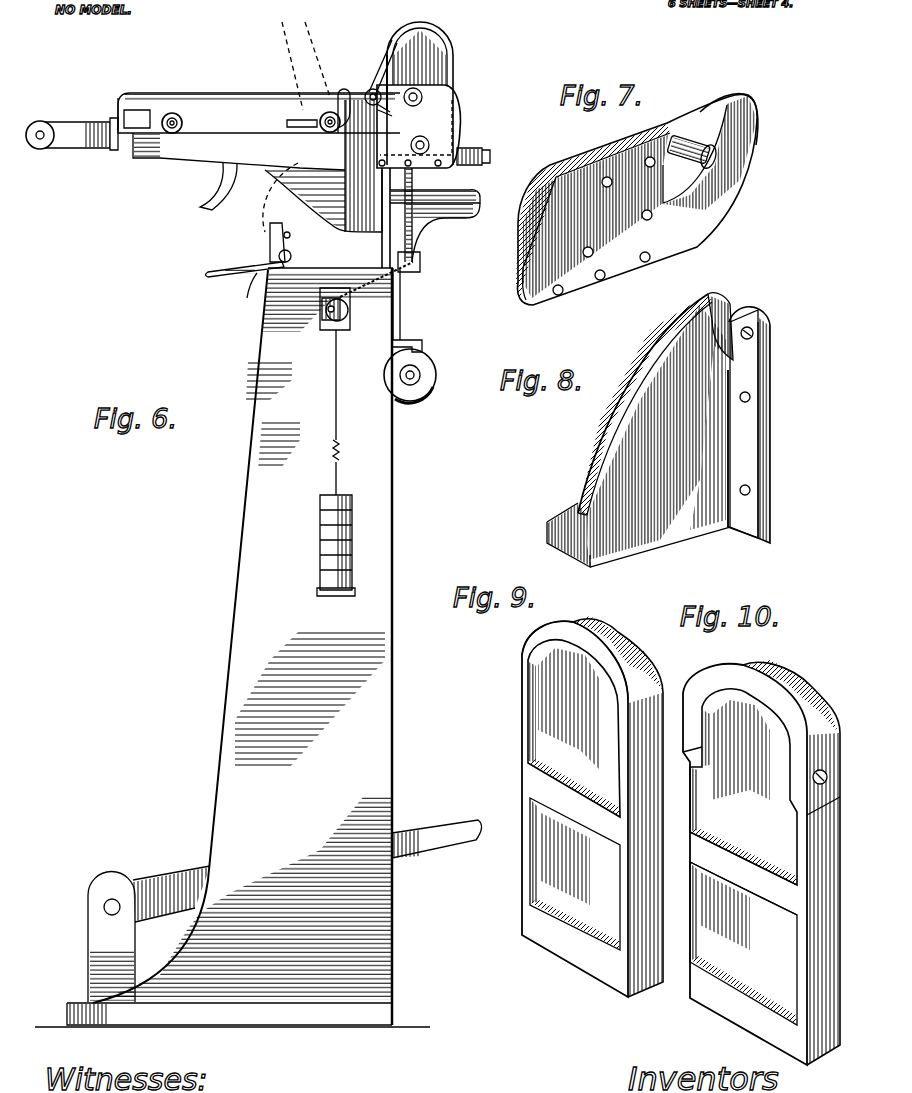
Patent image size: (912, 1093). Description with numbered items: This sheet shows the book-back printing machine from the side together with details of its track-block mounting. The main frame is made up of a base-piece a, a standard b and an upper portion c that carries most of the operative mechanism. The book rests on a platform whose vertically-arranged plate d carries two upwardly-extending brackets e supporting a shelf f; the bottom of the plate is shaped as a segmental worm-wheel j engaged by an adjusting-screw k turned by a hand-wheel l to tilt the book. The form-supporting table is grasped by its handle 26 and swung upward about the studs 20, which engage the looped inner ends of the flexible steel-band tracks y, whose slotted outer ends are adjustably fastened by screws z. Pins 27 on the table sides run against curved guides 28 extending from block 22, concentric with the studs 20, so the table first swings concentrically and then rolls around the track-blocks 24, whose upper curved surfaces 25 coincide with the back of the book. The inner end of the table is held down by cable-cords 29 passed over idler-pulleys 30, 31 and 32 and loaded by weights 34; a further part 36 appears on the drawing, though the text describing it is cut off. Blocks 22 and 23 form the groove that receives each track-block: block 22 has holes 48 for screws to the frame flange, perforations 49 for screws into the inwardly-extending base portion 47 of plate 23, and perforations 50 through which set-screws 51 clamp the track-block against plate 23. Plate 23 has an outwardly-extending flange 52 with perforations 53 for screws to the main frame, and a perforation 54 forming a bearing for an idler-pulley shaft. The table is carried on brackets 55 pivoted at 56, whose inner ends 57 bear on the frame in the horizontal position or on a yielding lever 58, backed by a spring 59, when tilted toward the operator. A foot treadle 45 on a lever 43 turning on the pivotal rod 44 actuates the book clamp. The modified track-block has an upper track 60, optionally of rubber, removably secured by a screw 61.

In FIG. 7, the studs 20 is at (695, 136).
In FIG. 6, the plate or block 22 is at (460, 108).
In FIG. 7, the plate or block 22 is at (578, 163).
In FIG. 8, the plate or block 23 is at (626, 403).
In FIG. 6, the track-block 24 is at (388, 50).
In FIG. 9, the track-block 24 is at (522, 718).
In FIG. 10, the track-block 24 is at (743, 873).
In FIG. 6, the upper curved surface 25 is at (450, 55).
In FIG. 9, the upper curved surface 25 is at (612, 632).
In FIG. 6, the handle 26 is at (43, 120).
In FIG. 6, the pins 27 is at (371, 102).
In FIG. 6, the curved guides 28 is at (336, 98).
In FIG. 7, the curved guides 28 is at (757, 145).
In FIG. 6, the cable-cords 29 is at (402, 293).
In FIG. 6, the idler-pulley 30 is at (340, 330).
In FIG. 6, the idler-pulley 31 is at (420, 266).
In FIG. 6, the idler-pulley 32 is at (380, 68).
In FIG. 6, the weights 34 is at (320, 548).
In FIG. 6, the screw 36 is at (184, 123).
In FIG. 6, the pivoted lever 43 is at (158, 872).
In FIG. 6, the pivotal rod 44 is at (100, 907).
In FIG. 6, the treadle portion 45 is at (430, 826).
In FIG. 8, the inwardly-extending base portion 47 is at (546, 528).
In FIG. 7, the holes 48 is at (644, 252).
In FIG. 7, the perforations 49 is at (564, 293).
In FIG. 7, the holes 50 is at (606, 189).
In FIG. 6, the set-screws 51 is at (420, 136).
In FIG. 8, the outwardly-extending flange 52 is at (752, 448).
In FIG. 8, the holes 53 is at (752, 397).
In FIG. 8, the perforations 54 is at (755, 333).
In FIG. 6, the brackets 55 is at (239, 171).
In FIG. 6, the pivot 56 is at (290, 188).
In FIG. 6, the inner ends 57 is at (352, 235).
In FIG. 6, the yielding lever 58 is at (245, 279).
In FIG. 6, the spring 59 is at (246, 293).
In FIG. 10, the track 60 is at (790, 682).
In FIG. 10, the screw 61 is at (812, 777).
In FIG. 6, the base-piece a is at (232, 1015).
In FIG. 6, the standard b is at (243, 646).
In FIG. 6, the upper portion c is at (290, 199).
In FIG. 6, the vertically-arranged plate d is at (402, 318).
In FIG. 6, the upwardly-extending brackets e is at (446, 232).
In FIG. 6, the supporting board or shelf f is at (480, 194).
In FIG. 6, the segmental worm-wheel j is at (428, 345).
In FIG. 6, the adjusting-screw k is at (420, 380).
In FIG. 6, the hand-wheel l is at (436, 366).
In FIG. 6, the steel bands (tracks) y is at (182, 93).
In FIG. 6, the screws z is at (114, 100).